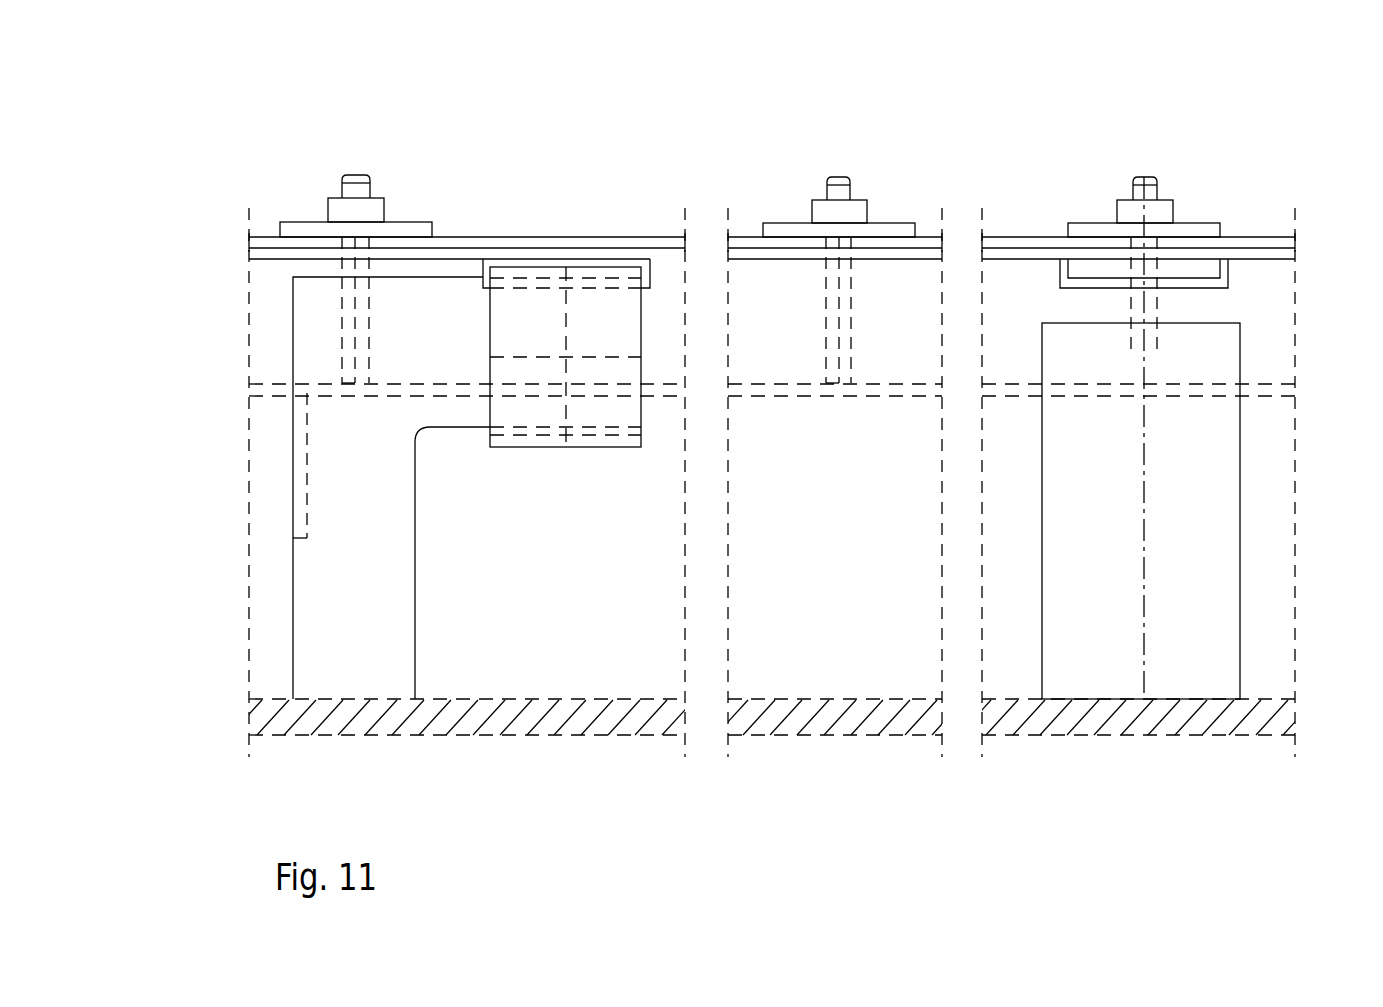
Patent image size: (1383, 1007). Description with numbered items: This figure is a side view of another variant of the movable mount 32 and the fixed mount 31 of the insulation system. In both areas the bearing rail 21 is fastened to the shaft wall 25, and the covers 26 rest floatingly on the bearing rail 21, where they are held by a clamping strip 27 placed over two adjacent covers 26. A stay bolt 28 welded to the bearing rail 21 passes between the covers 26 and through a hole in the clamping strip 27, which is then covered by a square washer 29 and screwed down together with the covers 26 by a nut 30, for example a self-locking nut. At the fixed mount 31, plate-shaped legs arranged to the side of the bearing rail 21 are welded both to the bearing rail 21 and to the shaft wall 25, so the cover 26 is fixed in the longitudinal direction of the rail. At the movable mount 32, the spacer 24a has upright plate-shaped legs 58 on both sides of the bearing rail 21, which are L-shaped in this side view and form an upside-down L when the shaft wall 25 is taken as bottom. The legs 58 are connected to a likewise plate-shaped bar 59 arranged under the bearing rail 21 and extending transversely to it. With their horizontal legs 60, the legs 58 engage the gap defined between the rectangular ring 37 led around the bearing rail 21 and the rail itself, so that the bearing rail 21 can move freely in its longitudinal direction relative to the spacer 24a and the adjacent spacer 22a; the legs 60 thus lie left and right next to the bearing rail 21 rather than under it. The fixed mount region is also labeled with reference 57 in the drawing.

The bearing rail 21 is at (270, 285).
The spacer 22a is at (1040, 575).
The spacer for the movable mount 24a is at (420, 518).
The shaft wall 25 is at (563, 722).
The cover 26 is at (672, 243).
The clamping strip 27 is at (558, 242).
The stay bolt 28 is at (362, 192).
The washer 29 is at (403, 232).
The nut 30 is at (335, 213).
The fixed mount 31 is at (1188, 188).
The movable mount 32 is at (493, 208).
The ring 37 is at (603, 310).
The fixpoint block 57 is at (1195, 557).
The legs 58 is at (325, 507).
The bar 59 is at (300, 467).
The horizontal legs 60 is at (477, 410).